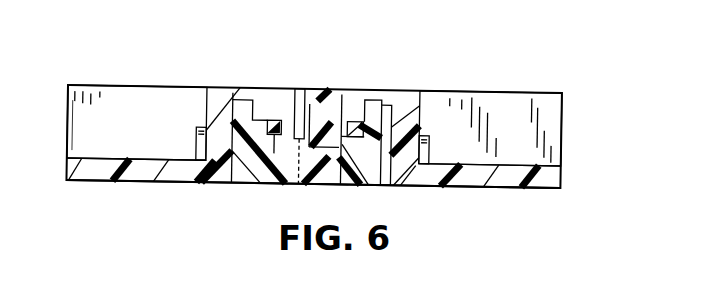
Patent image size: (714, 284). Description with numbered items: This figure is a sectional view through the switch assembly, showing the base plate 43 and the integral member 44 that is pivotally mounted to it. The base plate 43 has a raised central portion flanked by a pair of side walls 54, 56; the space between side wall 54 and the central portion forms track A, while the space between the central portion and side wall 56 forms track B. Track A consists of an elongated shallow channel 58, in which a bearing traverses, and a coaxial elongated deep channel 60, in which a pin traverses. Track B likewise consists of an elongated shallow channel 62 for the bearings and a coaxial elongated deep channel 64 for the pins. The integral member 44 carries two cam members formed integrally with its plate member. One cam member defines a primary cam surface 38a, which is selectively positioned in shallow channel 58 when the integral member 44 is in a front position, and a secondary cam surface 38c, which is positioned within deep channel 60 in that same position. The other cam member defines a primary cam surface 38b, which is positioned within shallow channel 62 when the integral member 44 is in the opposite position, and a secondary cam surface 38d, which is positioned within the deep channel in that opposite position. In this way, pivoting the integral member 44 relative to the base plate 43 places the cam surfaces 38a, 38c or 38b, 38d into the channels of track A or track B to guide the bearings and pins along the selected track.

The primary cam surface 38a is at (266, 90).
The primary cam surface 38b is at (367, 92).
The secondary cam surface 38c is at (278, 185).
The secondary cam surface 38d is at (335, 186).
The base plate 43 is at (510, 186).
The integral member 44 is at (242, 186).
The side wall 54 is at (207, 107).
The side wall 56 is at (422, 115).
The shallow channel 58 is at (276, 93).
The deep channel 60 is at (297, 90).
The shallow channel 62 is at (336, 95).
The deep channel 64 is at (348, 98).